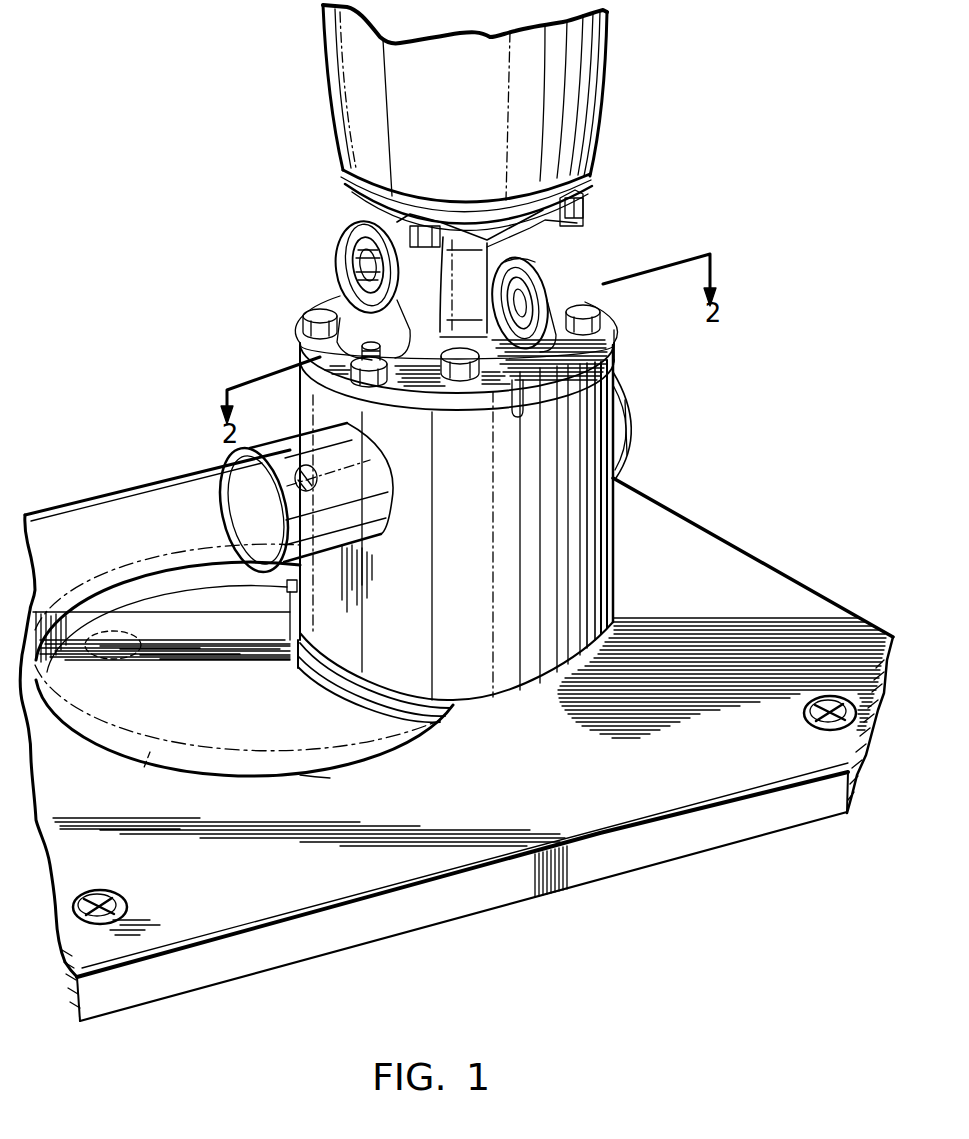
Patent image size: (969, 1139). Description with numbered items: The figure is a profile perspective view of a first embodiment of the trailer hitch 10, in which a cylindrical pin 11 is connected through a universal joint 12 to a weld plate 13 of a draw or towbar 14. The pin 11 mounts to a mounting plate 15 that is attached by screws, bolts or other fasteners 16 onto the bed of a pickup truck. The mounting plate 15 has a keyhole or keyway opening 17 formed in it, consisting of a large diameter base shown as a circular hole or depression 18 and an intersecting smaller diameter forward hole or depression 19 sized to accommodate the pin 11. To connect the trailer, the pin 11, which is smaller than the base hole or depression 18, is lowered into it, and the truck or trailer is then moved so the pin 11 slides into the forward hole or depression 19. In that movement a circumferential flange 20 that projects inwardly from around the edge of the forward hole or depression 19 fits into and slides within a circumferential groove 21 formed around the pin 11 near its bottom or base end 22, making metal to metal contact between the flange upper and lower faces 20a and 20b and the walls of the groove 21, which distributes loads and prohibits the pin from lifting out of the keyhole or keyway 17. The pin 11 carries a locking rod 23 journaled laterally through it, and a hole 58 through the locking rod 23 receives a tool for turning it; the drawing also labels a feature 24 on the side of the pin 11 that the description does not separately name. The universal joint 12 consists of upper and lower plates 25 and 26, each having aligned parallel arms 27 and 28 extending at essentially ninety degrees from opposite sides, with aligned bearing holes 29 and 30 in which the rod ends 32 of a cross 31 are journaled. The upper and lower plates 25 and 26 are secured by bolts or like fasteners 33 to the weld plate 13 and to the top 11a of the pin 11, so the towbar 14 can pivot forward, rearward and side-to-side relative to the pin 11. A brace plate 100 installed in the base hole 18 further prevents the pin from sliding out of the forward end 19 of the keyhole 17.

The trailer hitch 10 is at (714, 146).
The cylindrical pin 11 is at (583, 490).
The top of pin 11a is at (620, 333).
The universal joint 12 is at (610, 243).
The weld plate 13 is at (330, 178).
The draw or towbar 14 is at (433, 128).
The mounting plate 15 is at (557, 792).
The fasteners 16 is at (110, 893).
The keyhole or keyway opening 17 is at (327, 775).
The base hole or depression 18 is at (152, 708).
The forward hole or depression 19 is at (620, 613).
The circumferential flange 20 is at (288, 593).
The flange upper face 20a is at (285, 590).
The flange lower face 20b is at (293, 594).
The circumferential groove 21 is at (360, 712).
The bottom or base end 22 is at (388, 724).
The locking rod 23 is at (243, 502).
The side boss 24 is at (632, 424).
The upper plate 25 is at (598, 192).
The lower plate 26 is at (616, 367).
The arms of upper plate 27 is at (522, 418).
The arms of lower plate 28 is at (343, 296).
The bearing holes of upper plate arms 29 is at (570, 296).
The bearing holes of lower plate arms 30 is at (350, 250).
The cross 31 is at (440, 305).
The rod ends 32 is at (345, 280).
The bolts or like fasteners 33 is at (432, 224).
The hole 58 is at (303, 468).
The brace plate 100 is at (140, 770).